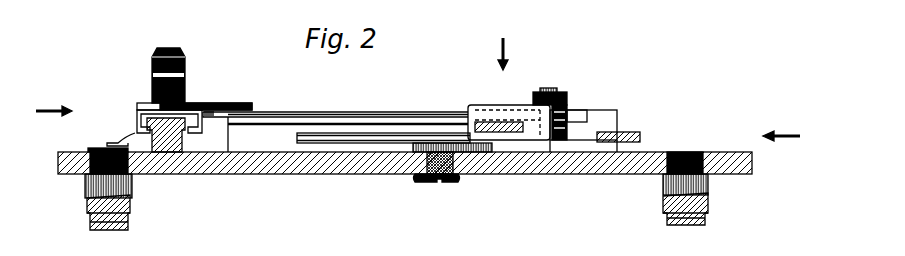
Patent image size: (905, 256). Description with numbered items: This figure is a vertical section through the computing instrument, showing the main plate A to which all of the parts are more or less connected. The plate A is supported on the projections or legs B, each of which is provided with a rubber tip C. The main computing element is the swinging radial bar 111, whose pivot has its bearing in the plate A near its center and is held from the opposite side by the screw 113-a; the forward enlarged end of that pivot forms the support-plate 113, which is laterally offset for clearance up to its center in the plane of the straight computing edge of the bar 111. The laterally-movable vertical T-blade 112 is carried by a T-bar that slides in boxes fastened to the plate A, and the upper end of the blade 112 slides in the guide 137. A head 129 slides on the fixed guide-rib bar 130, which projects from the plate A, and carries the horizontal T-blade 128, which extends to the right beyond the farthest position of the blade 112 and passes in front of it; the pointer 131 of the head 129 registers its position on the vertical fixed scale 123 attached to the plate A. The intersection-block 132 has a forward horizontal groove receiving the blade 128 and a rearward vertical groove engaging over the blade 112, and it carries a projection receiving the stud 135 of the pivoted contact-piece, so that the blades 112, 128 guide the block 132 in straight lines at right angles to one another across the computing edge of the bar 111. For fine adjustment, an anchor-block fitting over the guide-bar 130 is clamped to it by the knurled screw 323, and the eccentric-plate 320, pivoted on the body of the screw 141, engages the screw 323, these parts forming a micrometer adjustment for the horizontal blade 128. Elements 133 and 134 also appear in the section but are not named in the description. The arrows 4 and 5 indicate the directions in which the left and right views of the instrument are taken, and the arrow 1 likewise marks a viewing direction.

The view arrow 1 is at (511, 54).
The arrow 4 is at (54, 121).
The arrow 5 is at (781, 146).
The main plate A is at (405, 175).
The projections or legs B is at (132, 195).
The rubber tips C is at (397, 235).
The swinging radial bar 111 is at (370, 124).
The vertical T-blade 112 is at (495, 122).
The support-plate 113 is at (440, 181).
The screw 113-a is at (443, 195).
The vertical fixed scale 123 is at (88, 150).
The horizontal T-blade 128 is at (364, 108).
The head 129 is at (138, 115).
The fixed guide-rib bar 130 is at (188, 148).
The pointer 131 is at (126, 138).
The intersection-block 132 is at (512, 106).
The guide bar 133 is at (466, 108).
The bar 134 is at (440, 133).
The stud 135 is at (556, 90).
The guide 137 is at (605, 118).
The screw 141 is at (185, 88).
The eccentric-plate 320 is at (250, 96).
The knurled screw 323 is at (186, 56).